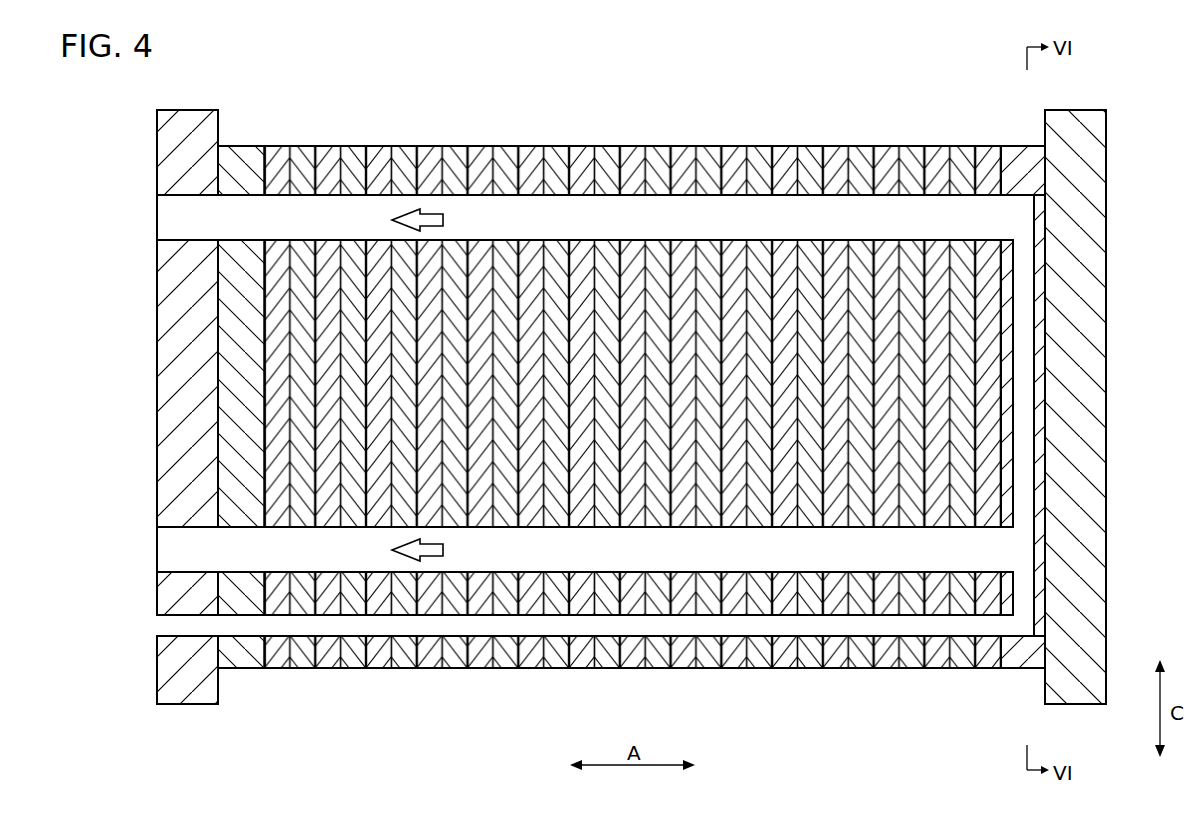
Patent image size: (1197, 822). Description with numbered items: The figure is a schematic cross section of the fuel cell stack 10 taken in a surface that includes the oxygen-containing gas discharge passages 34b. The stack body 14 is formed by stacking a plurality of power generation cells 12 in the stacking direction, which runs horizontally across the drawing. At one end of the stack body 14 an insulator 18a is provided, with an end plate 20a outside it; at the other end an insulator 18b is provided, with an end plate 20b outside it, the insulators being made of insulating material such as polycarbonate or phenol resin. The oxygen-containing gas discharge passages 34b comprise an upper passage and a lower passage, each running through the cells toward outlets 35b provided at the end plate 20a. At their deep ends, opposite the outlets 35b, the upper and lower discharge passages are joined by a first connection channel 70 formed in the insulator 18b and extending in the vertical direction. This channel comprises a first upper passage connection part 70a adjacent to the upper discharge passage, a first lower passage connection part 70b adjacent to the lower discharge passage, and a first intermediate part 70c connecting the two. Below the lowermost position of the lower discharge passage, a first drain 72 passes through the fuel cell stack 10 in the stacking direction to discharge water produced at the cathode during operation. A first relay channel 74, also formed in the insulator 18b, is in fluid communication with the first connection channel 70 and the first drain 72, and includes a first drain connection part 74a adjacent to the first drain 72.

The fuel cell stack 10 is at (443, 73).
The power generation cell 12 is at (680, 144).
The stack body 14 is at (832, 92).
The insulator 18a is at (241, 144).
The insulator 18b is at (1027, 144).
The end plate 20a is at (196, 108).
The end plate 20b is at (1092, 108).
The oxygen-containing gas discharge passage 34b is at (529, 207).
The outlet 35b is at (157, 213).
The first connection channel 70 is at (1022, 405).
The first upper passage connection part 70a is at (1020, 220).
The first lower passage connection part 70b is at (1020, 548).
The first intermediate part 70c is at (1025, 300).
The first drain 72 is at (681, 625).
The first relay channel 74 is at (1020, 597).
The first drain connection part 74a is at (1007, 628).